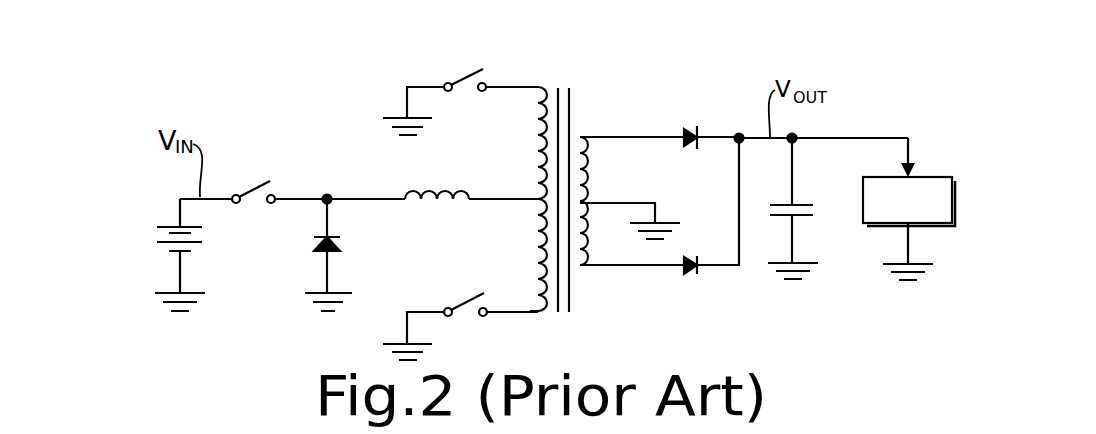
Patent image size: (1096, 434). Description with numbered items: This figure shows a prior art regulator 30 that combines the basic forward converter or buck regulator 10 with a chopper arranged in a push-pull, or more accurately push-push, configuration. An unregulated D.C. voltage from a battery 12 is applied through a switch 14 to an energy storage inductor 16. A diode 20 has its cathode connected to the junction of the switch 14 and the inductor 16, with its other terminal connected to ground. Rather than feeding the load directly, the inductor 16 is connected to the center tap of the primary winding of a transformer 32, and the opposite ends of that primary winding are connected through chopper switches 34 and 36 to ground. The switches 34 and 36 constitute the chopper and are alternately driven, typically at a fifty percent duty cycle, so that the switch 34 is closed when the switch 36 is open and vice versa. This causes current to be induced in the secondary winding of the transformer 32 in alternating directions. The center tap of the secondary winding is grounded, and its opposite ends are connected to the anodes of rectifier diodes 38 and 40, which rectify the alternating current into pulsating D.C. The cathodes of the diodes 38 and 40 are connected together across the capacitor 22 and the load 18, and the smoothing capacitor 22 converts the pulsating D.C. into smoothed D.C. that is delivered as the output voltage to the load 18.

The buck regulator 10 is at (312, 170).
The battery 12 is at (172, 225).
The switch 14 is at (256, 183).
The energy storage inductor 16 is at (447, 188).
The load 18 is at (938, 176).
The diode 20 is at (316, 246).
The smoothing capacitor 22 is at (806, 220).
The regulator 30 is at (415, 67).
The transformer 32 is at (553, 72).
The chopper switch 34 is at (474, 73).
The chopper switch 36 is at (472, 300).
The rectifier diode 38 is at (686, 132).
The rectifier diode 40 is at (686, 270).